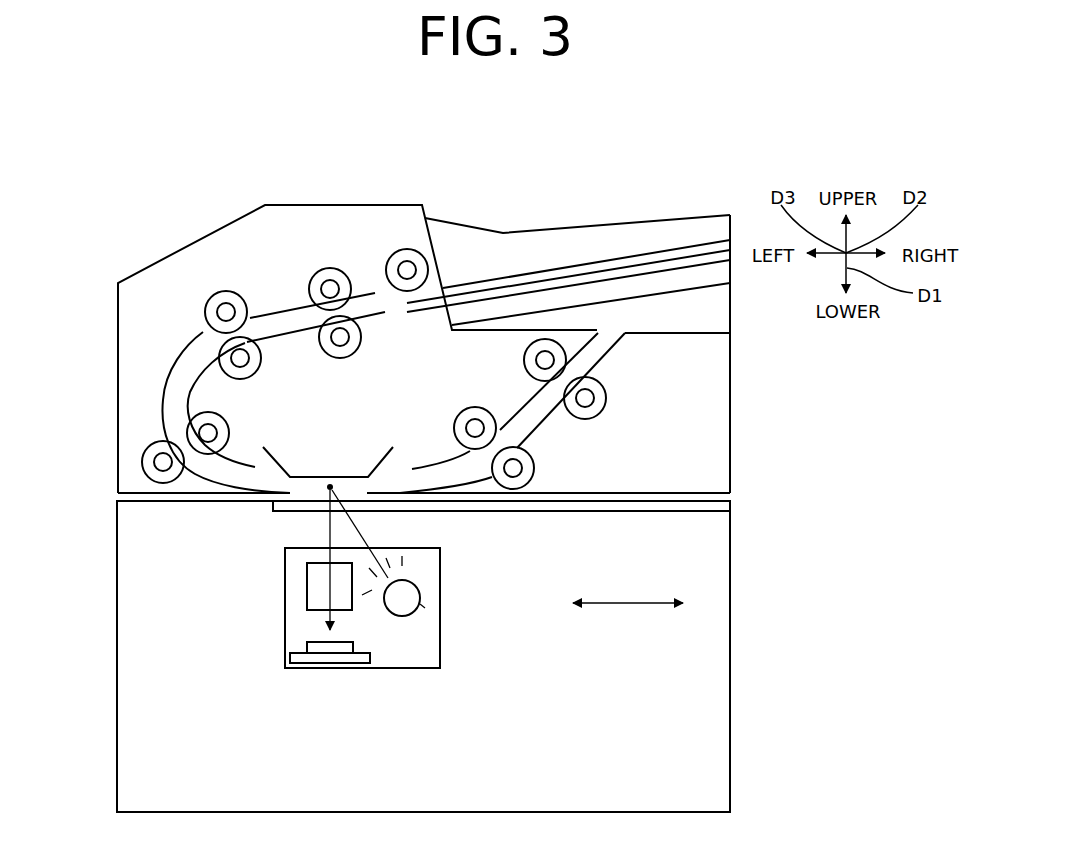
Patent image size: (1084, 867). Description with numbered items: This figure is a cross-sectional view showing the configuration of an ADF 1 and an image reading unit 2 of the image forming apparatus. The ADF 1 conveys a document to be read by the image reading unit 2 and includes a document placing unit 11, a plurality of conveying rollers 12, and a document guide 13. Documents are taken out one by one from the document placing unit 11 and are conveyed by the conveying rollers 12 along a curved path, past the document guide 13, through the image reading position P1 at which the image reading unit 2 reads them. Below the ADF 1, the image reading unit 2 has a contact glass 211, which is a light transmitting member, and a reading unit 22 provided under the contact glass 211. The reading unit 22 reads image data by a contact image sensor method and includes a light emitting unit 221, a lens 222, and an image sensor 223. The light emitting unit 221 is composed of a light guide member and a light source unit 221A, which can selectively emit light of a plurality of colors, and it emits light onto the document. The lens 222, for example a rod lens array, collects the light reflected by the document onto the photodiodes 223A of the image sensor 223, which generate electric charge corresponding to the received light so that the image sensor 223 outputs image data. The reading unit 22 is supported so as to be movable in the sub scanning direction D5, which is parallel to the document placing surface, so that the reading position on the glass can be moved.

The ADF 1 is at (118, 372).
The image reading unit 2 is at (117, 562).
The document placing unit 11 is at (610, 222).
The conveying rollers 12 is at (226, 291).
The document guide 13 is at (383, 447).
The image reading position P1 is at (330, 484).
The contact glass 211 is at (655, 513).
The reading unit 22 is at (477, 686).
The light emitting unit 221 is at (432, 583).
The light source unit 221A is at (425, 604).
The lens 222 is at (307, 573).
The image sensor 223 is at (302, 634).
The photodiode 223A is at (303, 644).
The sub scanning direction D5 is at (627, 606).